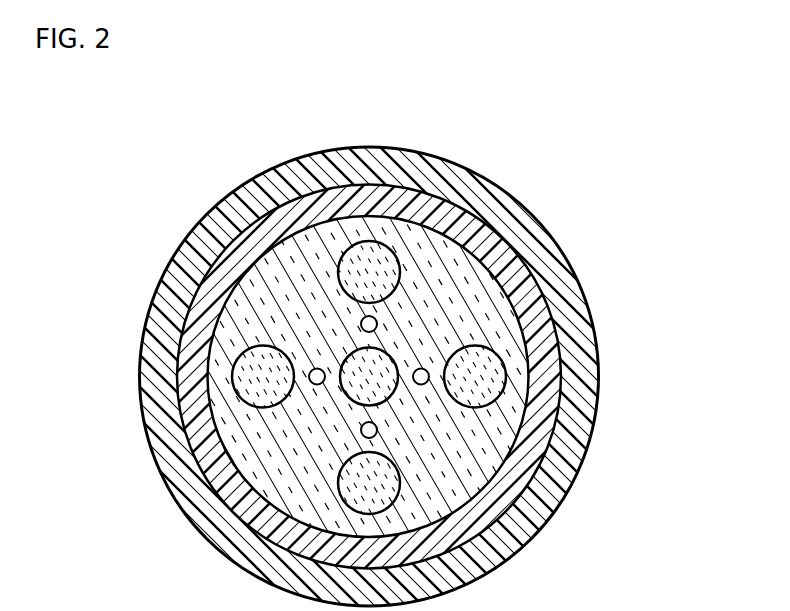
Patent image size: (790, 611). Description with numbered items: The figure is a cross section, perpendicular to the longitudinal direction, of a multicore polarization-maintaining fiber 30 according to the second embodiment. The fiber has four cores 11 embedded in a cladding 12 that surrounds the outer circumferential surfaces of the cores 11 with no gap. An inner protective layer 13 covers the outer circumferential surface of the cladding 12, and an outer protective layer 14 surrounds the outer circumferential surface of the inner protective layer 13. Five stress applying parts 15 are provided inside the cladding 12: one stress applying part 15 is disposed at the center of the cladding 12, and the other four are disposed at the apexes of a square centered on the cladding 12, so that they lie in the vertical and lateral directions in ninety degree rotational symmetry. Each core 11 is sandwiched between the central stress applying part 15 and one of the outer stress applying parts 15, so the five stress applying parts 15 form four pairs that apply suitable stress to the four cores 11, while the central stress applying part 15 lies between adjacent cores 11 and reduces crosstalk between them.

The multicore polarization-maintaining fiber 30 is at (395, 305).
The outer protective layer 14 is at (598, 374).
The inner protective layer 13 is at (563, 363).
The cladding 12 is at (415, 237).
The stress applying part 15 is at (377, 367).
The core 11 is at (423, 373).